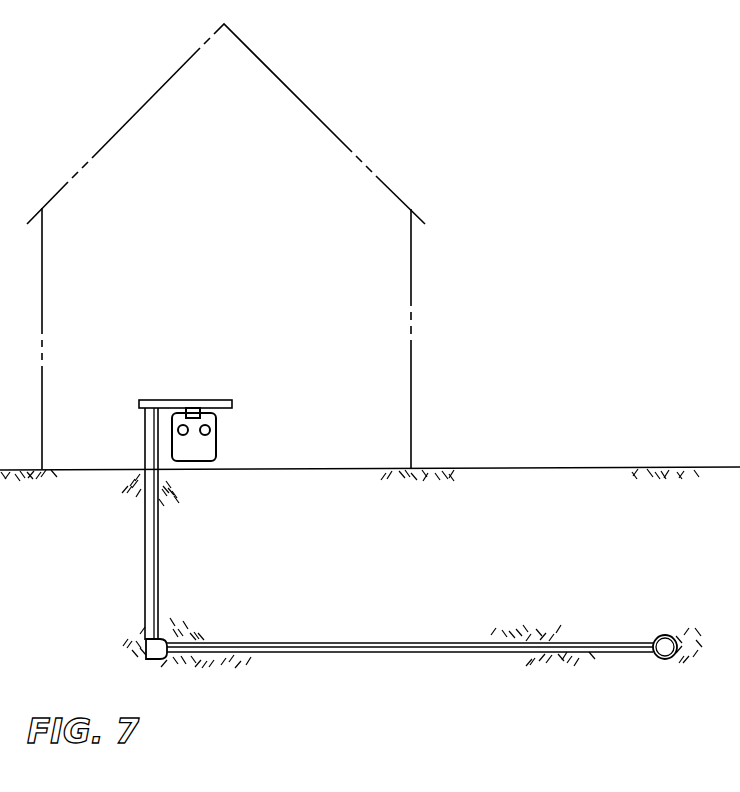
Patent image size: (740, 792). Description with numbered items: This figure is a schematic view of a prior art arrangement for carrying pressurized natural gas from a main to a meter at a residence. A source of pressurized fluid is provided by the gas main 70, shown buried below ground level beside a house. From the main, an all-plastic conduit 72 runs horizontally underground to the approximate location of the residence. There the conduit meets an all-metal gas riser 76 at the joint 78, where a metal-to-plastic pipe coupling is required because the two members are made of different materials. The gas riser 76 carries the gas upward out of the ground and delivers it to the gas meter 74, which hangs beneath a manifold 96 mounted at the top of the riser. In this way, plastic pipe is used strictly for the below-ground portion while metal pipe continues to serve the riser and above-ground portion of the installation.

The manifold 96 is at (206, 407).
The gas meter 74 is at (211, 438).
The gas riser 76 is at (162, 524).
The joint 78 is at (150, 650).
The conduit 72 is at (397, 648).
The gas main 70 is at (655, 653).